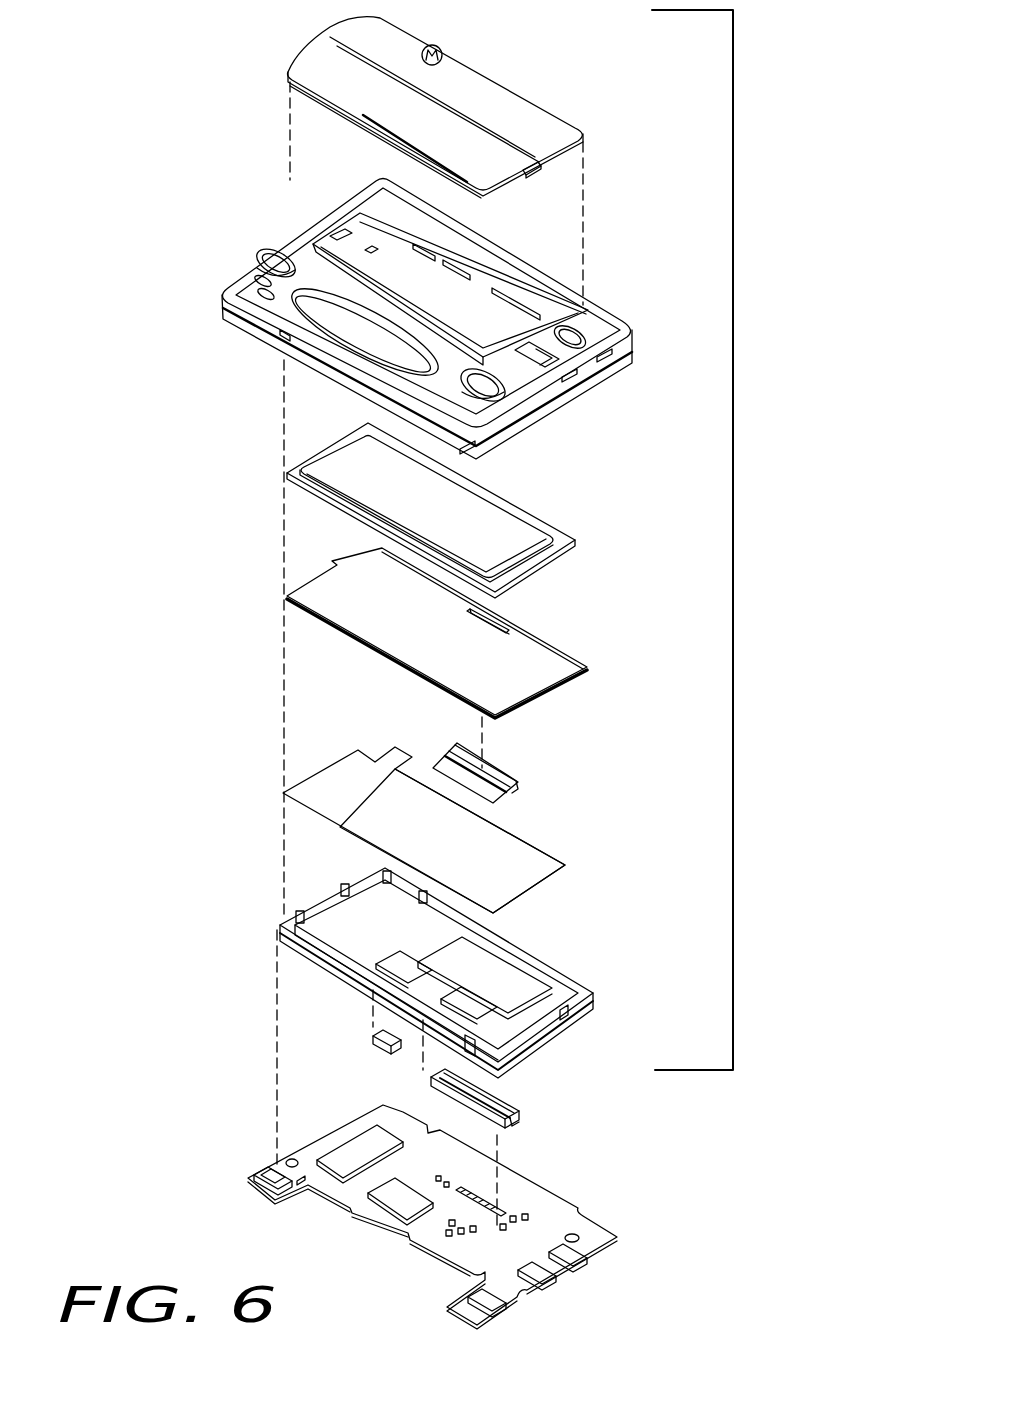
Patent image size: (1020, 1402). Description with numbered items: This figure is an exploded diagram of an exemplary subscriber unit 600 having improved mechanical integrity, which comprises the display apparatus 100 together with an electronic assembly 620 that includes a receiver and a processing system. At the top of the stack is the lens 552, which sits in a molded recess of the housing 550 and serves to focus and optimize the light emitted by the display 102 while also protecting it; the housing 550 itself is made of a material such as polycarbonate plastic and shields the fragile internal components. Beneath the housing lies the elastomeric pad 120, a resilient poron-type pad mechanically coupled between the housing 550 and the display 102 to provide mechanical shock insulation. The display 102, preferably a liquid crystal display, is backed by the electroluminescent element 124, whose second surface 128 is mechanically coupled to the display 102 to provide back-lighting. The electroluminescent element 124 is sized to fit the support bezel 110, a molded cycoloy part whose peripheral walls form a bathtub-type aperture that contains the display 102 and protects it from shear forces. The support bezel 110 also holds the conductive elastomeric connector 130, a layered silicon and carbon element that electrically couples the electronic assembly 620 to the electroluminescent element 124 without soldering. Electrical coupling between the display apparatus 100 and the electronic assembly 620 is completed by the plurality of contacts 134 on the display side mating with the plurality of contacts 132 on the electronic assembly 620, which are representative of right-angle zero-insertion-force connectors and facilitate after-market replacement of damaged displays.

The subscriber unit 600 is at (140, 1217).
The display apparatus 100 is at (733, 650).
The lens 552 is at (340, 107).
The housing 550 is at (382, 290).
The elastomeric pad 120 is at (519, 508).
The display 102 is at (572, 660).
The plurality of contacts 134 is at (508, 773).
The electroluminescent element 124 is at (562, 865).
The second surface 128 is at (508, 847).
The support bezel 110 is at (533, 948).
The conductive elastomeric connector 130 is at (375, 1040).
The plurality of contacts 132 is at (503, 1103).
The electronic assembly 620 is at (580, 1225).